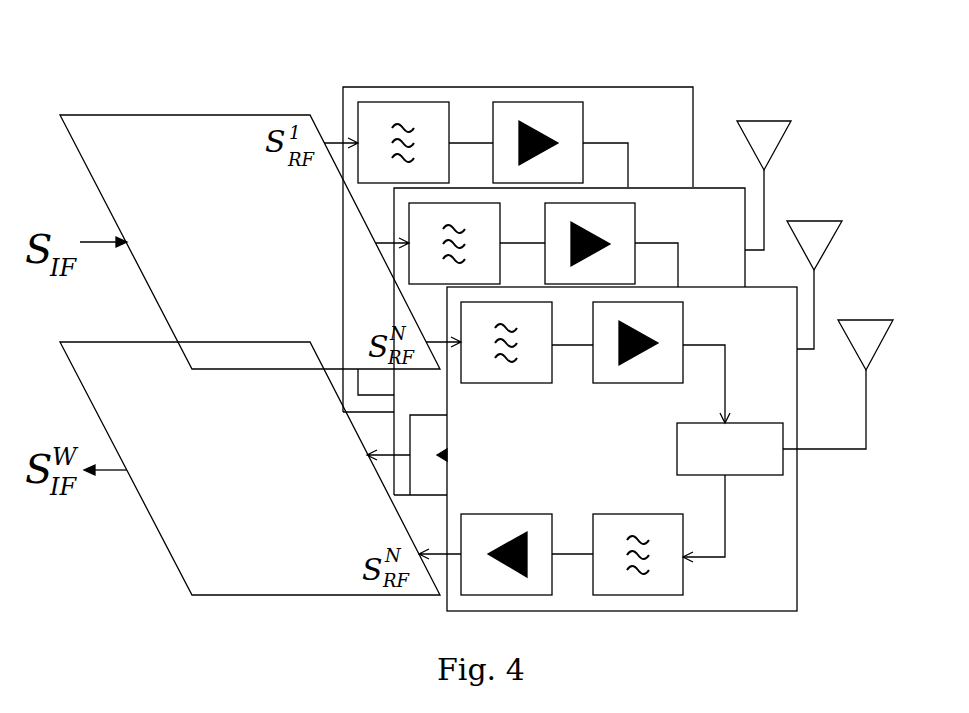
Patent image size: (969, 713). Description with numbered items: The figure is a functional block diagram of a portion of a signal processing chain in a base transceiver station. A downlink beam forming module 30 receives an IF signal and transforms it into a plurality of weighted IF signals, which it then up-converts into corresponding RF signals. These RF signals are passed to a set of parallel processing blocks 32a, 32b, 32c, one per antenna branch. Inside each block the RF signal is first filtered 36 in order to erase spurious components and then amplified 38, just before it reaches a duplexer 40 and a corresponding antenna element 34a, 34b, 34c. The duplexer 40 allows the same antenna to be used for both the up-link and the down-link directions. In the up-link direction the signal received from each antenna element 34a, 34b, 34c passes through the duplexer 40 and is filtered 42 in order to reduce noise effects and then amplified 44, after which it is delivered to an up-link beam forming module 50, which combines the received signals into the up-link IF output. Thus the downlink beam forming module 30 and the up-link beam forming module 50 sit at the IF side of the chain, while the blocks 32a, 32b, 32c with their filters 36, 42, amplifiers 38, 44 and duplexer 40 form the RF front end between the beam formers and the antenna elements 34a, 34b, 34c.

The downlink beam forming module 30 is at (170, 140).
The up-link beam forming module 50 is at (247, 588).
The block 32a is at (650, 98).
The block 32b is at (703, 215).
The block 32c is at (782, 578).
The antenna element 34a is at (770, 130).
The antenna element 34b is at (816, 240).
The antenna element 34c is at (863, 335).
The filter 36 is at (377, 119).
The amplifier 38 is at (510, 118).
The duplexer 40 is at (757, 462).
The filter 42 is at (672, 588).
The amplifier 44 is at (542, 587).